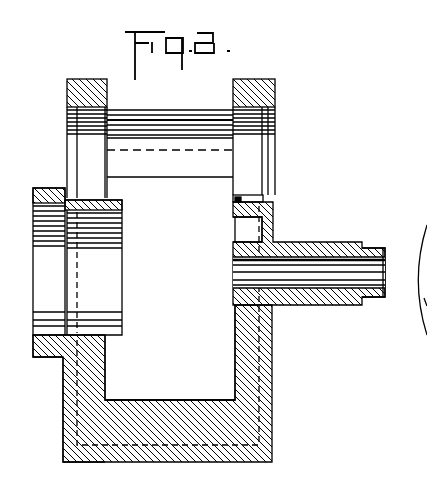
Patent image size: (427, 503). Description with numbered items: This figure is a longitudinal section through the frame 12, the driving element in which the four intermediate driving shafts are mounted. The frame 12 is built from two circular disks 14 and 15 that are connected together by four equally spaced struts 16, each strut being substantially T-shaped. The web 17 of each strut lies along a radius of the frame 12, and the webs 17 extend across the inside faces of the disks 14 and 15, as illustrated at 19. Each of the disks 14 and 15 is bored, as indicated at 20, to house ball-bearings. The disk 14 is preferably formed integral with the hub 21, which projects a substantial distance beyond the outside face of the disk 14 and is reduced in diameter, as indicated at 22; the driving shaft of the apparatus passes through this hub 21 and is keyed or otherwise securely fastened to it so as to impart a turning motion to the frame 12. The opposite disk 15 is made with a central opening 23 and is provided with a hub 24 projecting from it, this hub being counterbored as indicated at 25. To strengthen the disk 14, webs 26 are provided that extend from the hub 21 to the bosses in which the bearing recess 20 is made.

The frame 12 is at (170, 352).
The circular disk 14 is at (272, 364).
The circular disk 15 is at (65, 396).
The strut 16 is at (184, 108).
The web 17 is at (173, 398).
The web extension 19 is at (235, 325).
The bore 20 is at (109, 107).
The hub 21 is at (308, 243).
The reduced portion 22 is at (376, 248).
The central opening 23 is at (93, 328).
The hub 24 is at (33, 189).
The counterbore 25 is at (40, 356).
The web 26 is at (233, 232).